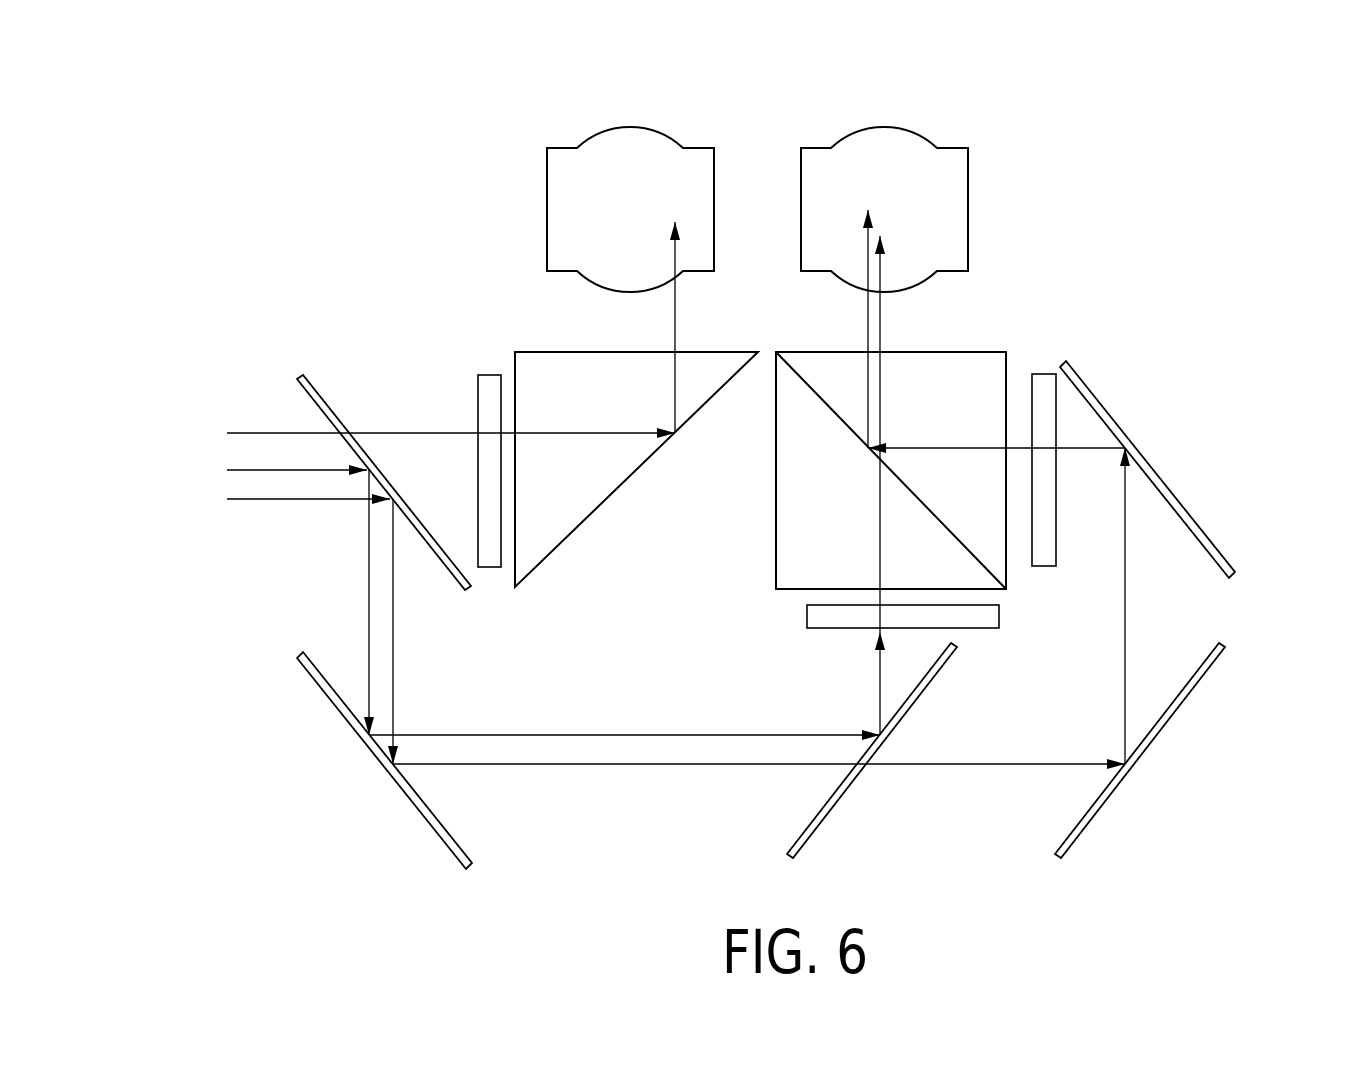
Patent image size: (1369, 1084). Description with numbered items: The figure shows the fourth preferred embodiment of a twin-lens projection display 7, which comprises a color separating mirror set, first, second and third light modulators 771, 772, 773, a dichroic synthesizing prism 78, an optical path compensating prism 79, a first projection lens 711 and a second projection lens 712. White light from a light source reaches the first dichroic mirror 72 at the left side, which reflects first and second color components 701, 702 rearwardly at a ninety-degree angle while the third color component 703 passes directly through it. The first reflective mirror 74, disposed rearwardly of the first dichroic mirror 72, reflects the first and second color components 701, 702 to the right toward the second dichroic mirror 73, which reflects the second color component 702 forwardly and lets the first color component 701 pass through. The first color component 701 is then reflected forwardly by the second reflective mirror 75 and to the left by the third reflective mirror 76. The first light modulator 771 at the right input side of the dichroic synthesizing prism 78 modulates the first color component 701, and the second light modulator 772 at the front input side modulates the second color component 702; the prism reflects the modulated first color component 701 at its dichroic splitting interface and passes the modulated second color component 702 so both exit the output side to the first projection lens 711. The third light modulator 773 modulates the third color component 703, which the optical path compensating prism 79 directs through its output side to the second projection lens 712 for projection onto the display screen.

The twin-lens projection display 7 is at (1260, 288).
The first dichroic mirror 72 is at (310, 385).
The second dichroic mirror 73 is at (820, 818).
The first reflective mirror 74 is at (433, 823).
The second reflective mirror 75 is at (1100, 803).
The third reflective mirror 76 is at (1210, 540).
The dichroic synthesizing prism 78 is at (973, 353).
The optical path compensating prism 79 is at (540, 375).
The first color component 701 is at (268, 503).
The second color component 702 is at (258, 472).
The third color component 703 is at (240, 432).
The first projection lens 711 is at (927, 157).
The second projection lens 712 is at (603, 162).
The first light modulator 771 is at (1040, 380).
The second light modulator 772 is at (967, 622).
The third light modulator 773 is at (490, 378).